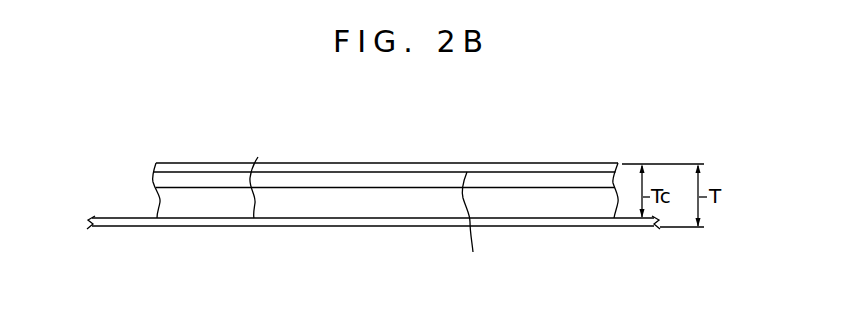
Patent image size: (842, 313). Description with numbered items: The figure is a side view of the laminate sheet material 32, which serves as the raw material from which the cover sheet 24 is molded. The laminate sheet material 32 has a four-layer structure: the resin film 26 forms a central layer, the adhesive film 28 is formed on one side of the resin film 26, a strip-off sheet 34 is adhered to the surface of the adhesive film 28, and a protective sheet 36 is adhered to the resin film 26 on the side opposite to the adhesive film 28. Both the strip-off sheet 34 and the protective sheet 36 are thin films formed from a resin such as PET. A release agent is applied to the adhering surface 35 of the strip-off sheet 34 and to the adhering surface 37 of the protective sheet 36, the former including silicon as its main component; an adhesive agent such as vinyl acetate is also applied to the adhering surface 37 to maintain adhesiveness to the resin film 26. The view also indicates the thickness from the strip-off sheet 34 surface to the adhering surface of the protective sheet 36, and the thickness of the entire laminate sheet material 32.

The cover sheet 24 is at (73, 137).
The resin film 26 is at (163, 202).
The adhesive film 28 is at (162, 181).
The laminate sheet material 32 is at (636, 153).
The strip-off sheet 34 is at (360, 165).
The adhering surface 35 is at (471, 225).
The protective sheet 36 is at (303, 227).
The adhering surface 37 is at (254, 175).